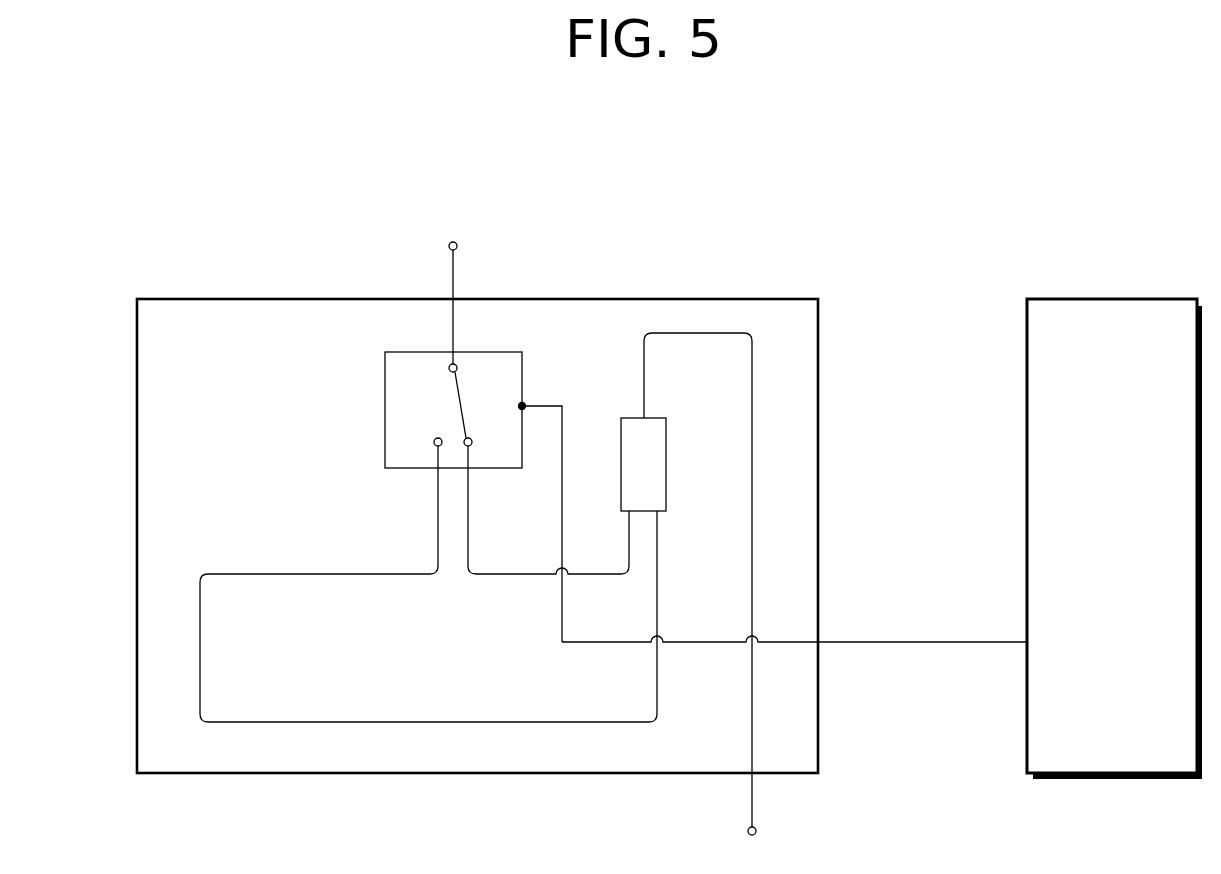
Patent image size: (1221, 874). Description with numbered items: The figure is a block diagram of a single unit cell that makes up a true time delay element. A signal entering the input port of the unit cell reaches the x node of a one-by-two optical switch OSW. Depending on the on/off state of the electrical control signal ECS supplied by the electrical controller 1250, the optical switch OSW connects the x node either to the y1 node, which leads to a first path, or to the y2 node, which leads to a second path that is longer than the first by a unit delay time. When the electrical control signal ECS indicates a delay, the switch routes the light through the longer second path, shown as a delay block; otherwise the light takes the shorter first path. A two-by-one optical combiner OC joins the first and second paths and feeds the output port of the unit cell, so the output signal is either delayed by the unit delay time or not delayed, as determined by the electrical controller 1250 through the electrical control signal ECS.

The electrical controller 1250 is at (1138, 299).
The 1×2 optical switch OSW is at (385, 408).
The 2×1 optical combiner OC is at (643, 464).
The electrical control signal ECS is at (943, 653).